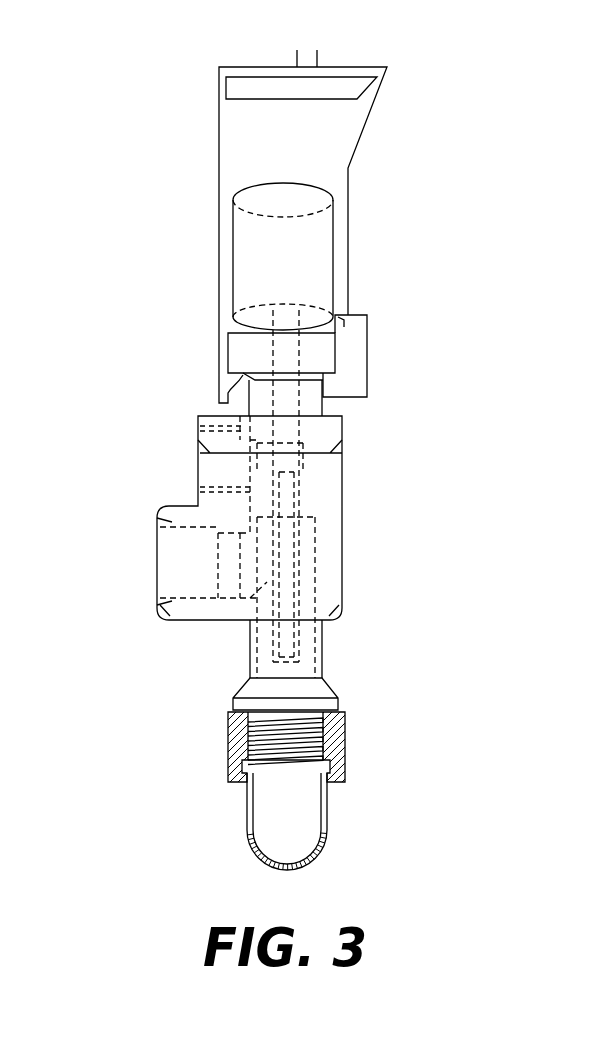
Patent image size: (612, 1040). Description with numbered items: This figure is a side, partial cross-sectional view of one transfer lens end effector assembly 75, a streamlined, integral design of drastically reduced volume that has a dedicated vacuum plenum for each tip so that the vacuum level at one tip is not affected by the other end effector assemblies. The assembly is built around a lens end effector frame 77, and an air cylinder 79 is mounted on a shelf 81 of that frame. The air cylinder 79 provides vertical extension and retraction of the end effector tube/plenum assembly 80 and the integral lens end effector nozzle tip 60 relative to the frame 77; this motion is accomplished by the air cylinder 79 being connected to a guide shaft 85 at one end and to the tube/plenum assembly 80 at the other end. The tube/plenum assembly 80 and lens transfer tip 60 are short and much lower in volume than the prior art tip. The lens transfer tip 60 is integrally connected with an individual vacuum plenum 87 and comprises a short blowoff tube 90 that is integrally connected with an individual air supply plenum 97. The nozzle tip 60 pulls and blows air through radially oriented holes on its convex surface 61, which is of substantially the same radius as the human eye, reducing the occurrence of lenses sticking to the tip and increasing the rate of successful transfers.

The end effector assembly 75 is at (147, 246).
The lens end effector frame 77 is at (360, 143).
The air cylinder 79 is at (298, 267).
The guide shaft 85 is at (290, 358).
The shelf 81 is at (367, 358).
The end effector tube/plenum assembly 80 is at (335, 602).
The air supply plenum 97 is at (198, 468).
The blowoff tube 90 is at (300, 497).
The vacuum plenum 87 is at (156, 563).
The lens end effector nozzle tip 60 is at (348, 717).
The convex surface 61 is at (295, 855).